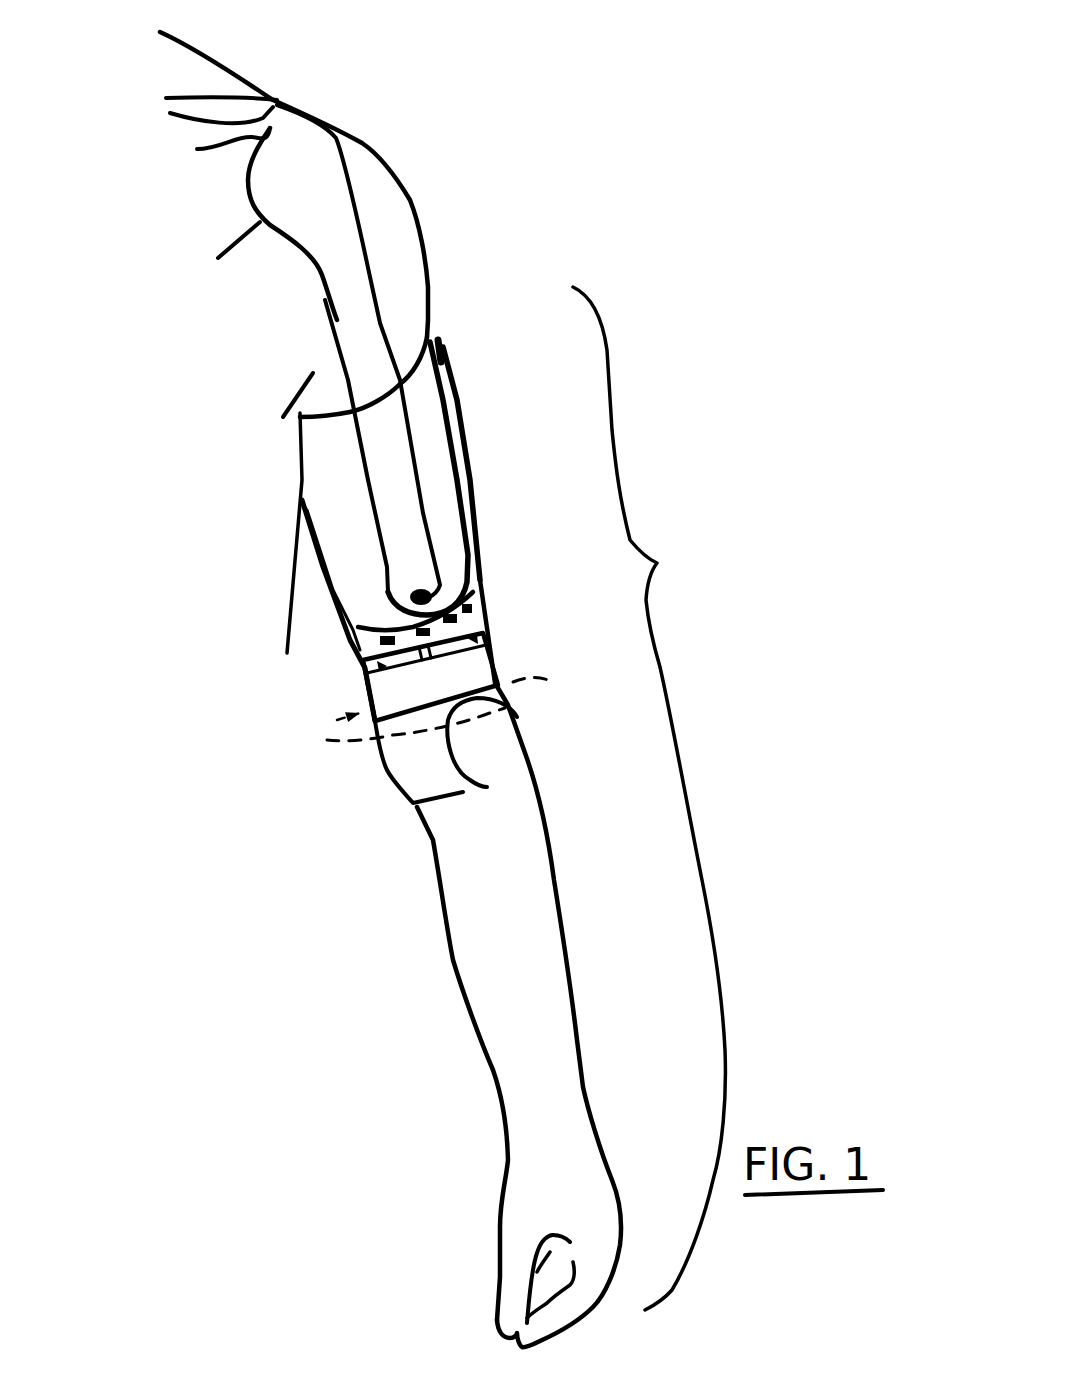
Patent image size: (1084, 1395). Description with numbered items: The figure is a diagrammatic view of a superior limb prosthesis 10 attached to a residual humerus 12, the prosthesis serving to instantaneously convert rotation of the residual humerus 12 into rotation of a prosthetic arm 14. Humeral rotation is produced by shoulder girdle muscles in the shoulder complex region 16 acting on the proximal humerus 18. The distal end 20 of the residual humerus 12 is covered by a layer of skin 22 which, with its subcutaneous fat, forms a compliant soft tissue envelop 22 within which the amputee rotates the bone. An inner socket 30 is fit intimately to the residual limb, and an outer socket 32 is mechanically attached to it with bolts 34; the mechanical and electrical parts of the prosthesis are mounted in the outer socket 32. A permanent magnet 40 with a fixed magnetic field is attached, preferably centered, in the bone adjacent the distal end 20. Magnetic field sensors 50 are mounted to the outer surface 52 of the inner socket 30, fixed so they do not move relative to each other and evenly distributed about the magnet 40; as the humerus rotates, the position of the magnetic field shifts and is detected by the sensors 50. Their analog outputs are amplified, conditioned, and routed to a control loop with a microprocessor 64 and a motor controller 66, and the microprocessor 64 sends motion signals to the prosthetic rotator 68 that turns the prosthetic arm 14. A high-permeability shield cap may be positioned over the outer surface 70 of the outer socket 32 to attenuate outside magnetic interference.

The superior limb prosthesis 10 is at (649, 798).
The residual humerus 12 is at (380, 452).
The prosthetic arm 14 is at (480, 973).
The shoulder complex region 16 is at (437, 137).
The proximal humerus 18 is at (263, 175).
The distal end of residual humerus 20 is at (370, 627).
The skin layer (compliant soft tissue envelop) 22 is at (432, 320).
The inner socket 30 is at (466, 493).
The outer socket 32 is at (452, 382).
The bolts 34 is at (446, 353).
The permanent magnet 40 is at (444, 590).
The magnetic field sensors 50 is at (468, 611).
The outer surface of inner socket 52 is at (470, 606).
The microprocessor 64 is at (347, 677).
The motor controller 66 is at (468, 641).
The prosthetic rotator 68 is at (500, 681).
The outer surface of outer socket 70 is at (488, 628).